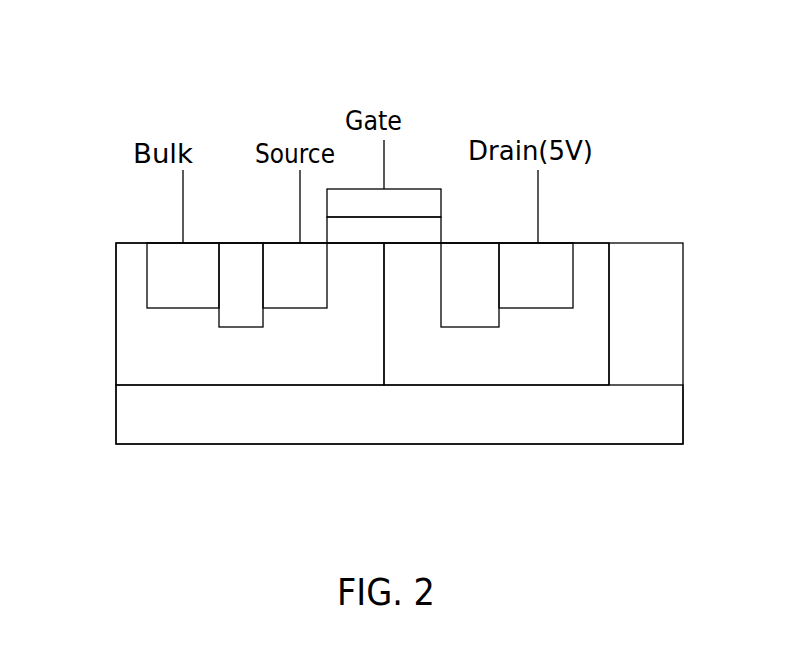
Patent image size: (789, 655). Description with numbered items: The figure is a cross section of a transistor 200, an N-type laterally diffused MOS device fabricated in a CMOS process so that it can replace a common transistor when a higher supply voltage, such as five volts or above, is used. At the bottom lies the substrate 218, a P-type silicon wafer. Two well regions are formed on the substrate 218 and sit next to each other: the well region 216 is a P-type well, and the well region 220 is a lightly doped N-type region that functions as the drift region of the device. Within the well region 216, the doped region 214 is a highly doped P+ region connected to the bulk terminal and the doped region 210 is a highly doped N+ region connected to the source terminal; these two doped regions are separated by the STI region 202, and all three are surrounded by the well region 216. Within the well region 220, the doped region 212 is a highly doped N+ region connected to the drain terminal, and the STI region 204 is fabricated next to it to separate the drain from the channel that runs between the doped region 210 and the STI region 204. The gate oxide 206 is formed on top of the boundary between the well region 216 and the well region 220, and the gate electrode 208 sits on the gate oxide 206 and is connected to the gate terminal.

The transistor 200 is at (125, 73).
The STI region 202 is at (240, 257).
The STI region 204 is at (469, 256).
The gate oxide 206 is at (430, 233).
The gate electrode 208 is at (412, 200).
The doped region 210 is at (276, 252).
The doped region 212 is at (552, 259).
The doped region 214 is at (163, 257).
The well region 216 is at (133, 361).
The substrate 218 is at (133, 405).
The well region 220 is at (583, 353).